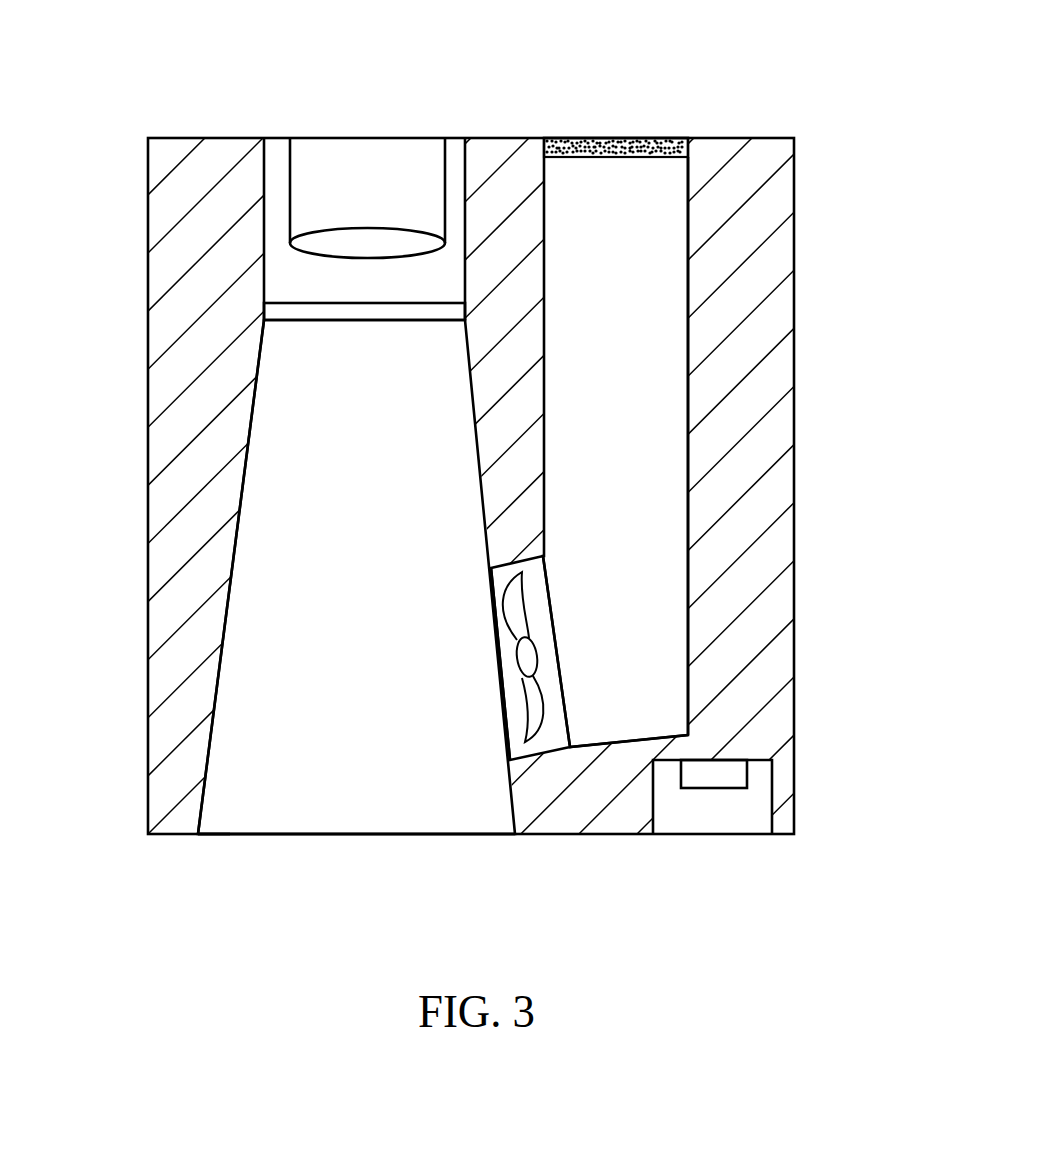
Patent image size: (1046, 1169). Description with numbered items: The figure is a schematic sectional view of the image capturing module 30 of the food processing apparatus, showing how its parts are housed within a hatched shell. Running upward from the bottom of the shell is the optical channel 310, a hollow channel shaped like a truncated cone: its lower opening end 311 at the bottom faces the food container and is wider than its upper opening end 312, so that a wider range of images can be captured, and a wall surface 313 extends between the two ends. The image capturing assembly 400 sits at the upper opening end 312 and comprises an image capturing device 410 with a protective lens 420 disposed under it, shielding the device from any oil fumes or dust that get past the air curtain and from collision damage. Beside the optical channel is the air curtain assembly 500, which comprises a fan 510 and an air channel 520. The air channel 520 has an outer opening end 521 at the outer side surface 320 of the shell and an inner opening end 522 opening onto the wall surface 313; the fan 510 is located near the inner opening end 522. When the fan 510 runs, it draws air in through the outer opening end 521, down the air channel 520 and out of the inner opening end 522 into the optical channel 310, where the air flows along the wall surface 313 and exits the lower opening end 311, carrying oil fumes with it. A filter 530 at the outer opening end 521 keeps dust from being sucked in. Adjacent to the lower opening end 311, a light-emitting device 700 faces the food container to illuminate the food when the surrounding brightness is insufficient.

The image capturing module 30 is at (223, 92).
The optical channel 310 is at (282, 522).
The lower opening end 311 is at (306, 834).
The upper opening end 312 is at (300, 332).
The wall surface 313 is at (208, 763).
The outer side surface 320 is at (725, 138).
The image capturing assembly 400 is at (353, 172).
The image capturing device 410 is at (402, 245).
The protective lens 420 is at (297, 312).
The air curtain assembly 500 is at (660, 280).
The fan 510 is at (531, 651).
The air channel 520 is at (660, 535).
The outer opening end 521 is at (590, 138).
The inner opening end 522 is at (498, 647).
The filter 530 is at (649, 138).
The light-emitting device 700 is at (722, 773).